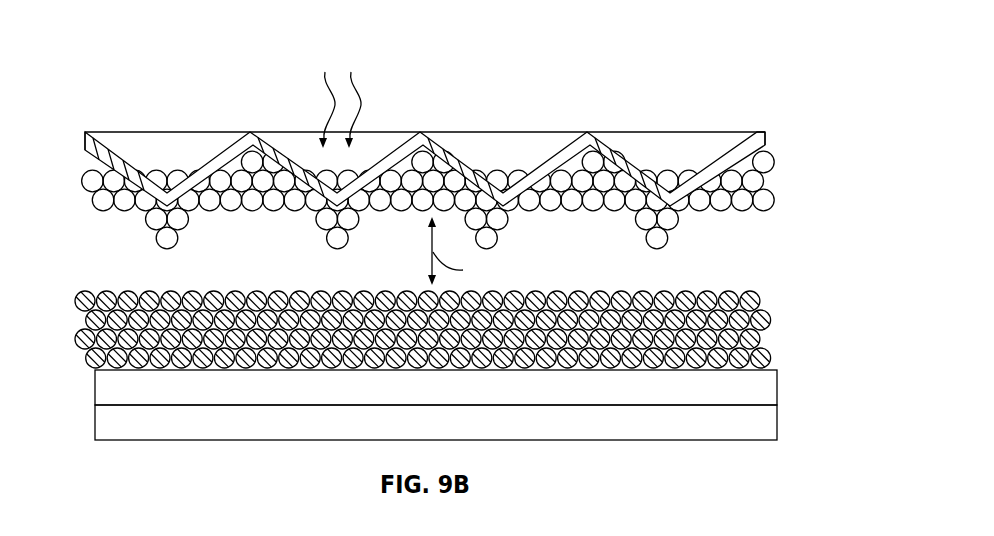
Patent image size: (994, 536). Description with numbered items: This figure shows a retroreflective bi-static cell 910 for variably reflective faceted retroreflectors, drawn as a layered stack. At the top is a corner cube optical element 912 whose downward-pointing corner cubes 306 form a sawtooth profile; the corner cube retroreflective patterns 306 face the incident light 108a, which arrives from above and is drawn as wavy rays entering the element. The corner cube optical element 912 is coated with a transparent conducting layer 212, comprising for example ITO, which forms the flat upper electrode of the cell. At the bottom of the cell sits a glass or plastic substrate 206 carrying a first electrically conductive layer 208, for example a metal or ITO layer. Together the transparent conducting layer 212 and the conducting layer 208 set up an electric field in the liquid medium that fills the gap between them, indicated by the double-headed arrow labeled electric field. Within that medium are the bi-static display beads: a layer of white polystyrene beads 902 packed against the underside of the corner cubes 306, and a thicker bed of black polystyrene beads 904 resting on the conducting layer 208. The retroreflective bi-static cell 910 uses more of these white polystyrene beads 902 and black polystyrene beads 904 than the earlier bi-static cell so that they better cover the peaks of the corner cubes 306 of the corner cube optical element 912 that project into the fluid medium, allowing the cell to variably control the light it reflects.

The retroreflective bi-static cell 910 is at (146, 72).
The incident light 108a is at (362, 105).
The corner cube optical element 912 is at (502, 138).
The corner cube retroreflective patterns 306 is at (670, 158).
The transparent conducting layer 212 is at (768, 135).
The white polystyrene beads 902 is at (708, 210).
The black polystyrene beads 904 is at (760, 304).
The first electrically conductive layer 208 is at (777, 385).
The substrate 206 is at (777, 422).